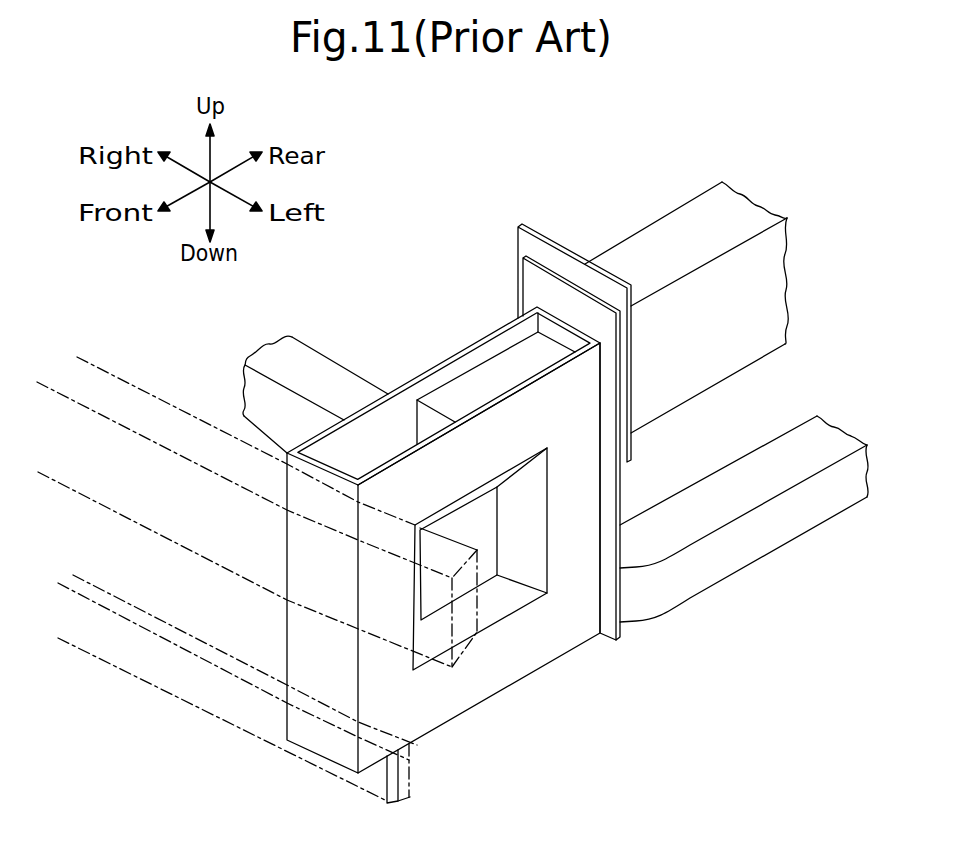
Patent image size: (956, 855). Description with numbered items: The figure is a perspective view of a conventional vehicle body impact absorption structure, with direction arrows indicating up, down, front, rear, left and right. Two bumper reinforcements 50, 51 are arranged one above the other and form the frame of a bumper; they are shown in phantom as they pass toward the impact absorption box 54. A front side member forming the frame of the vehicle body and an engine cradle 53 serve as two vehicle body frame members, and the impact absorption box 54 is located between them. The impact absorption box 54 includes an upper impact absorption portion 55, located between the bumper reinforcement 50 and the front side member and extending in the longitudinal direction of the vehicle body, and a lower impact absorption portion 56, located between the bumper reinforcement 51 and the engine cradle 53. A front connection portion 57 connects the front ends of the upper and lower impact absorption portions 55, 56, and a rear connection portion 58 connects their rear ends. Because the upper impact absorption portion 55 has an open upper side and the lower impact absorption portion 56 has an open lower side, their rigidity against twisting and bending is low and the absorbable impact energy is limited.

The bumper reinforcement 50 is at (175, 407).
The bumper reinforcement 51 is at (188, 703).
The engine cradle 53 is at (767, 542).
The impact absorption box 54 is at (453, 517).
The upper impact absorption portion 55 is at (472, 458).
The lower impact absorption portion 56 is at (533, 653).
The front connection portion 57 is at (378, 592).
The rear connection portion 58 is at (570, 482).